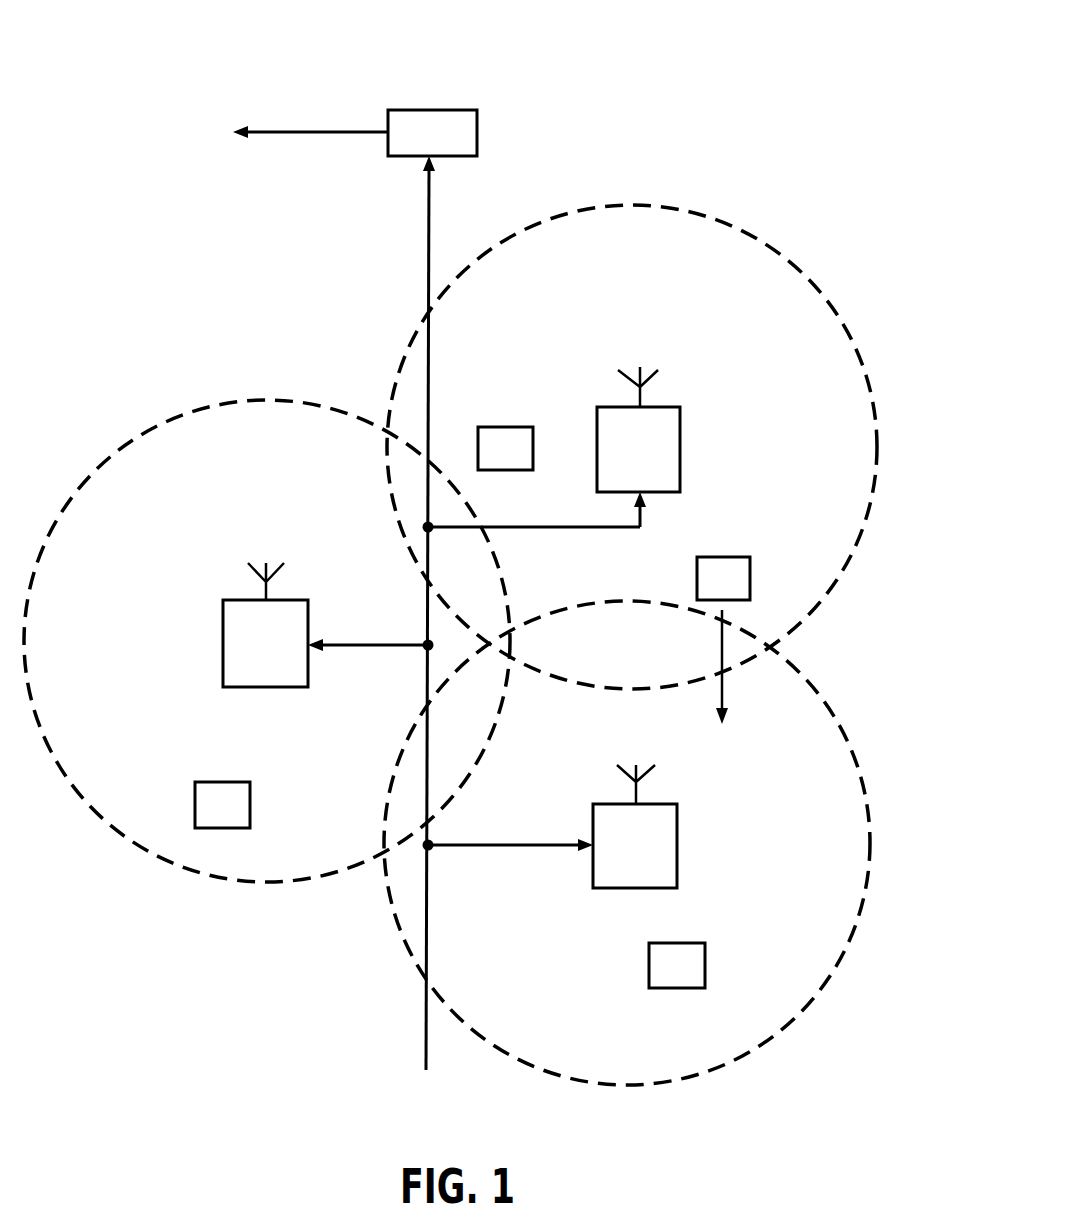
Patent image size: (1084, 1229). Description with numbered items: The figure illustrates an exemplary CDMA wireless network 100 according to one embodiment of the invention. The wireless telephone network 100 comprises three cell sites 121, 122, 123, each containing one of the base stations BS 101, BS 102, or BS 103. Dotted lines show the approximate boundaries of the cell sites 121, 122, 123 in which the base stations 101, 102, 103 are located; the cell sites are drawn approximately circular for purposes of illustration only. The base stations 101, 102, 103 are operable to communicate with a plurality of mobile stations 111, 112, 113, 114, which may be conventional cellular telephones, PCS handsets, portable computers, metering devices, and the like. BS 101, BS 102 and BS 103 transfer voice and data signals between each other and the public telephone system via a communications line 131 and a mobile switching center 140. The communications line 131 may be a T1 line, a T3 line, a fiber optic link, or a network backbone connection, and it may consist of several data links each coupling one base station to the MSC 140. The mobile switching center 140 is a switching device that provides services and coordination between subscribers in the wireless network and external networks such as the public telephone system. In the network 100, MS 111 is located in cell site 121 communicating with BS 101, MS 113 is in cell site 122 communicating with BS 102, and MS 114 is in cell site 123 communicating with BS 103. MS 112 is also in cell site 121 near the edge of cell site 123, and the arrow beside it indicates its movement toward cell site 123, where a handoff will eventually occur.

The CDMA wireless network 100 is at (719, 67).
The base station 101 is at (680, 450).
The base station 102 is at (223, 644).
The base station 103 is at (677, 845).
The mobile station 111 is at (505, 427).
The mobile station 112 is at (697, 577).
The mobile station 113 is at (228, 782).
The mobile station 114 is at (705, 962).
The cell site 121 is at (618, 205).
The cell site 122 is at (255, 400).
The cell site 123 is at (827, 703).
The communications line 131 is at (428, 243).
The mobile switching center 140 is at (433, 110).